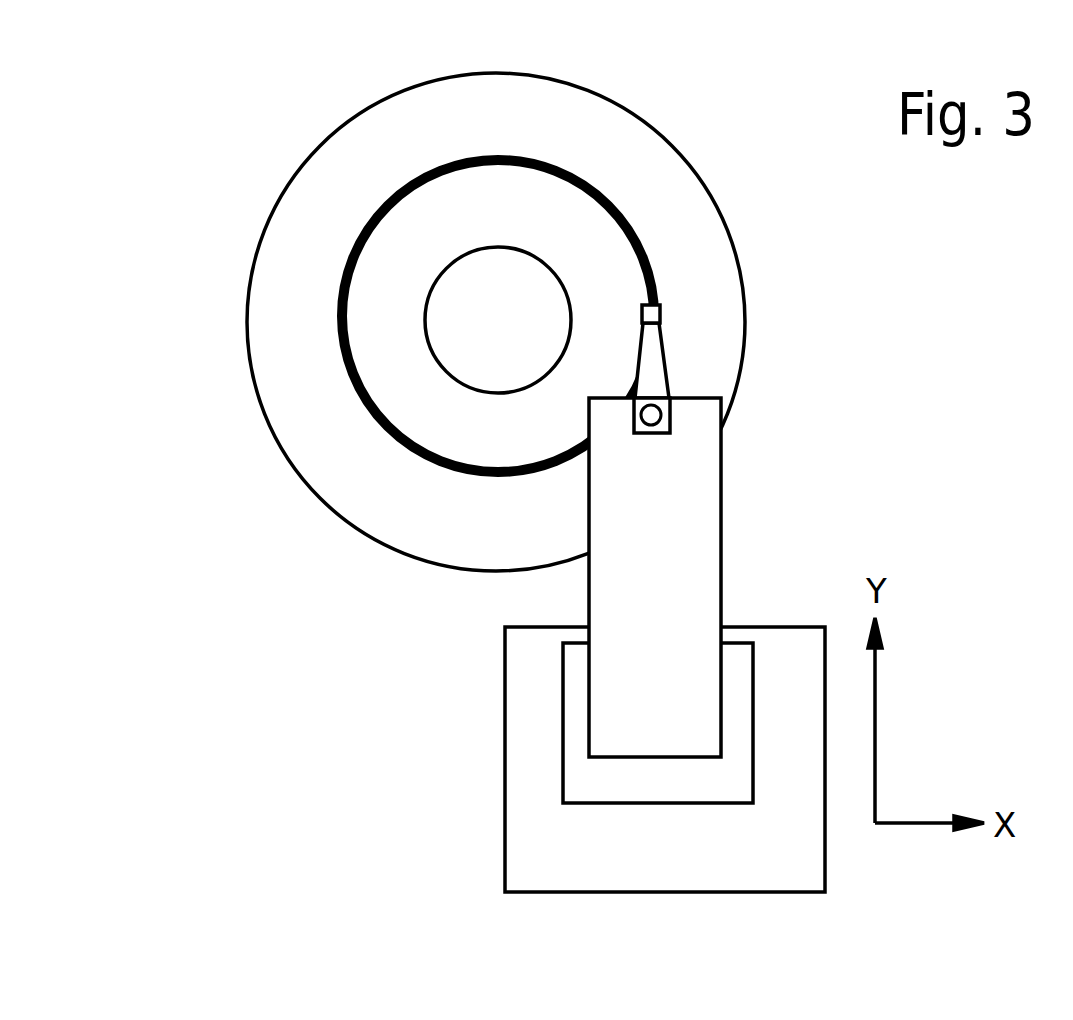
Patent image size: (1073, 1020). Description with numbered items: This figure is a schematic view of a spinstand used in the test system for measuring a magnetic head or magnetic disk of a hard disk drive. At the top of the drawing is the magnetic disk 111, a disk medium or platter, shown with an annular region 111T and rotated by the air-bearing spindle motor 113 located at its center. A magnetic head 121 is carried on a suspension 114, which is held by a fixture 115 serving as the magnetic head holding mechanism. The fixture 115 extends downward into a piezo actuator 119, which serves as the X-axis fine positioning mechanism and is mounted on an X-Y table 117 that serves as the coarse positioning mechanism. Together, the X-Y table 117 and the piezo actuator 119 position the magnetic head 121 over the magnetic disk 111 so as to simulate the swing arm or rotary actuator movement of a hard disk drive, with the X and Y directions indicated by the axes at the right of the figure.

The magnetic disk 111 is at (290, 465).
The turntable rim 111T is at (353, 275).
The air-bearing spindle motor 113 is at (446, 266).
The suspension 114 is at (665, 363).
The fixture 115 is at (720, 540).
The X-Y table 117 is at (505, 793).
The piezo actuator 119 is at (563, 685).
The magnetic head 121 is at (660, 318).